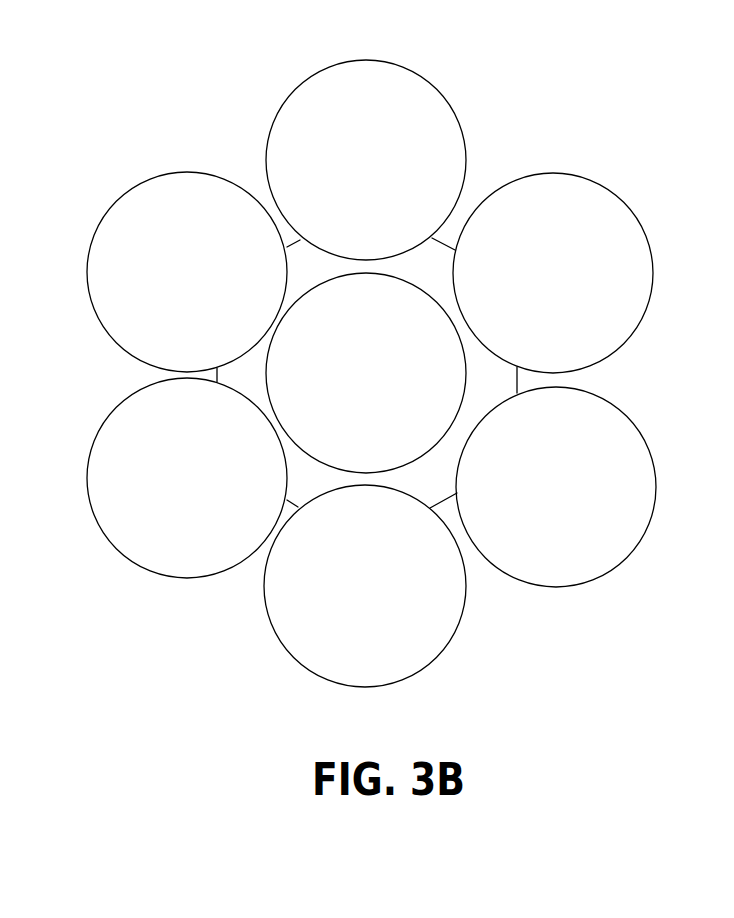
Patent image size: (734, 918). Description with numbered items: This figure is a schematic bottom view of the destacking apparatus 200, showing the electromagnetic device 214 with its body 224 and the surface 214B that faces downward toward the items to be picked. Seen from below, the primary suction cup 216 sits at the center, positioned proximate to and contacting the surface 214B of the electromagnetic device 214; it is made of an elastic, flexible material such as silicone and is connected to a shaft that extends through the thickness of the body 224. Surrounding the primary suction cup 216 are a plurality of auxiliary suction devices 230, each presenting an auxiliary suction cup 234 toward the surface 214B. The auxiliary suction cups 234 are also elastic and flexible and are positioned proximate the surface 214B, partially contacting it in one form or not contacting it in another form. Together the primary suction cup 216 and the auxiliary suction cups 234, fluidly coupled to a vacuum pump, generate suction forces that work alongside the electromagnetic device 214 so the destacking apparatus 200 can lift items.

The destacking apparatus 200 is at (178, 135).
The electromagnetic device 214 is at (516, 181).
The surface of the electromagnetic device 214B is at (437, 248).
The primary suction cup 216 is at (467, 373).
The body 224 is at (286, 246).
The auxiliary suction device 230 is at (392, 355).
The auxiliary suction cup 234 is at (527, 198).